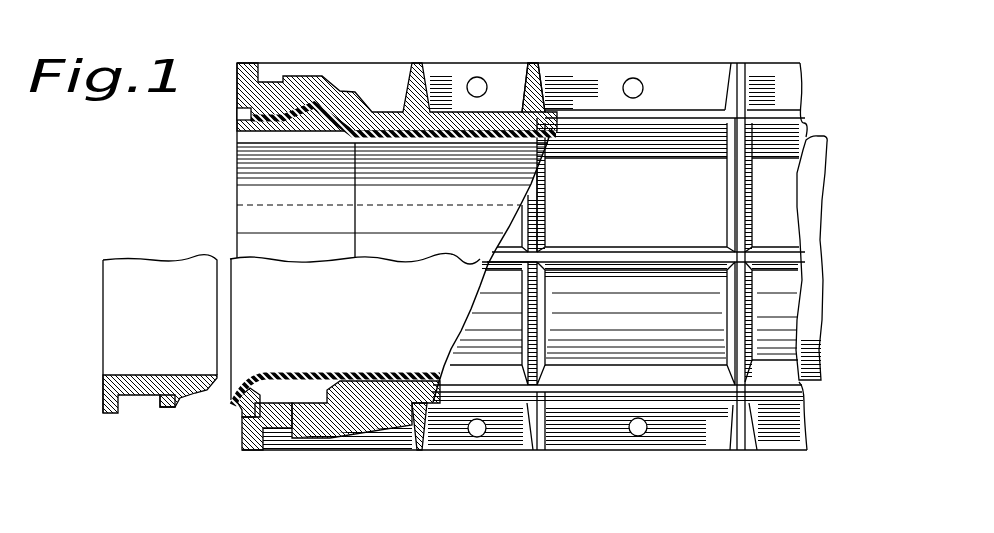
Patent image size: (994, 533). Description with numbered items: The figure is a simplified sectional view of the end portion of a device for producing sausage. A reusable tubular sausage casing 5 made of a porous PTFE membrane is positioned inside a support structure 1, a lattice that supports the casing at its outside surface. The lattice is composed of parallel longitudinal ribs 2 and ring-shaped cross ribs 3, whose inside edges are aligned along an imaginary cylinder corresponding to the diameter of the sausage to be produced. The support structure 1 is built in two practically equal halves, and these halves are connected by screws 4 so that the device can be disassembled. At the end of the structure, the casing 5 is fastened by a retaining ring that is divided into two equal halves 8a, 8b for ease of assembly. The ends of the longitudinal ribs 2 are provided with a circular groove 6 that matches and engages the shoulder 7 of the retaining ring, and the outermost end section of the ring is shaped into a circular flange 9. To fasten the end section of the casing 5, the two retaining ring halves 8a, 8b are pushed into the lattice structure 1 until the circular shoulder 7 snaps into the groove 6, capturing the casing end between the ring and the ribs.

The support structure 1 is at (474, 48).
The longitudinal ribs 2 is at (507, 73).
The cross ribs 3 is at (538, 78).
The screws 4 is at (478, 438).
The tubular sausage casing 5 is at (768, 175).
The circular groove 6 is at (210, 208).
The shoulder 7 is at (240, 172).
The retaining ring half 8a is at (238, 115).
The retaining ring half 8b is at (135, 396).
The circular flange 9 is at (103, 414).